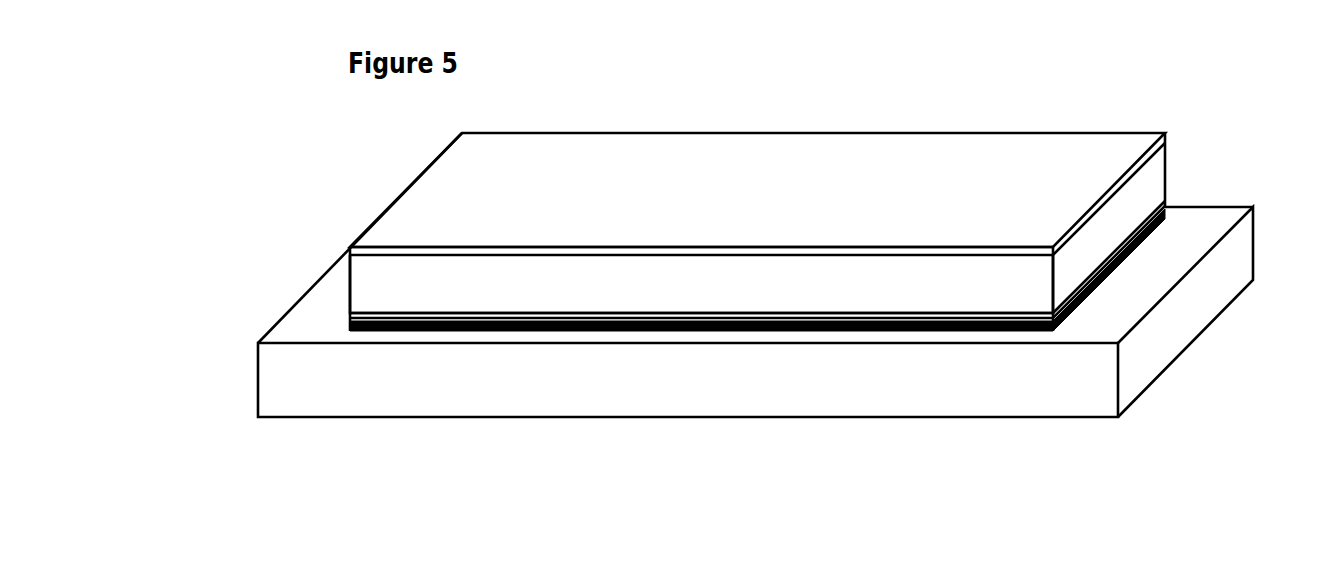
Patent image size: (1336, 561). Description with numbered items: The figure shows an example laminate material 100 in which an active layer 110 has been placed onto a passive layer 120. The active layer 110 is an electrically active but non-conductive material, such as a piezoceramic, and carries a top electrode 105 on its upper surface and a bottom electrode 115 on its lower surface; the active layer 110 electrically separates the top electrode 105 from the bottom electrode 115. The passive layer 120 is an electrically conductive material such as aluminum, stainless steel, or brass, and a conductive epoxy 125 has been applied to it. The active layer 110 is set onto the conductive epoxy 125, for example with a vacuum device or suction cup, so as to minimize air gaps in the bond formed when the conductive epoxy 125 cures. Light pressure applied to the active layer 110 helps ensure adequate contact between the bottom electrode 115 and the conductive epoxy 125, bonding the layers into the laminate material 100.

The laminate material 100 is at (793, 278).
The top electrode 105 is at (967, 247).
The active layer 110 is at (348, 287).
The bottom electrode 115 is at (945, 322).
The passive layer 120 is at (277, 322).
The conductive epoxy 125 is at (1147, 238).